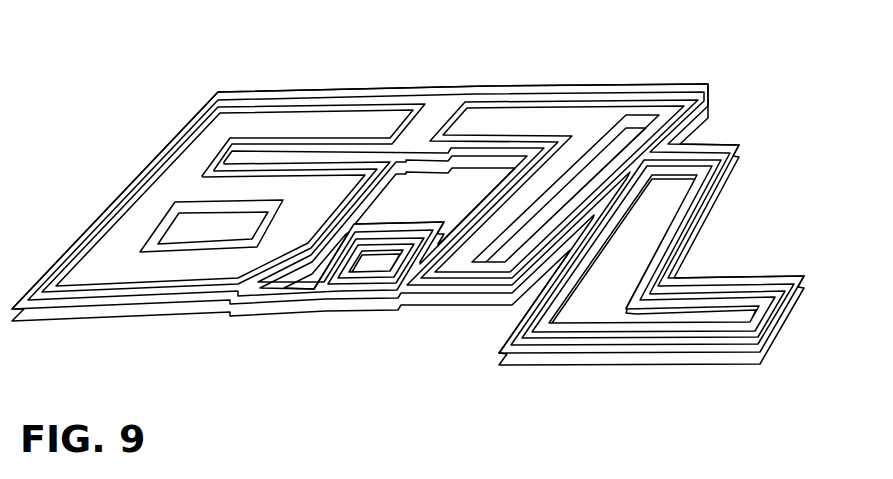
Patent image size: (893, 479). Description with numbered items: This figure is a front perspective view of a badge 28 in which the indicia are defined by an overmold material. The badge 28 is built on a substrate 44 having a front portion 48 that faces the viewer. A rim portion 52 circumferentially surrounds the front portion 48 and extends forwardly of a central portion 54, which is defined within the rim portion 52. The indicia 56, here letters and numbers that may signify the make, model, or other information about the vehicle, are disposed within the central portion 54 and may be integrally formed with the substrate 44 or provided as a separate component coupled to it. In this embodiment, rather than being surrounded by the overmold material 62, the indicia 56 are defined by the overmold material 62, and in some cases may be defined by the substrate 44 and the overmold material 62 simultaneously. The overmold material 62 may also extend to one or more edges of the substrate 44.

The badge 28 is at (408, 214).
The substrate 44 is at (210, 310).
The front portion 48 is at (590, 108).
The rim portion 52 is at (85, 303).
The central portion 54 is at (268, 192).
The indicia 56 is at (413, 113).
The overmold material 62 is at (627, 117).